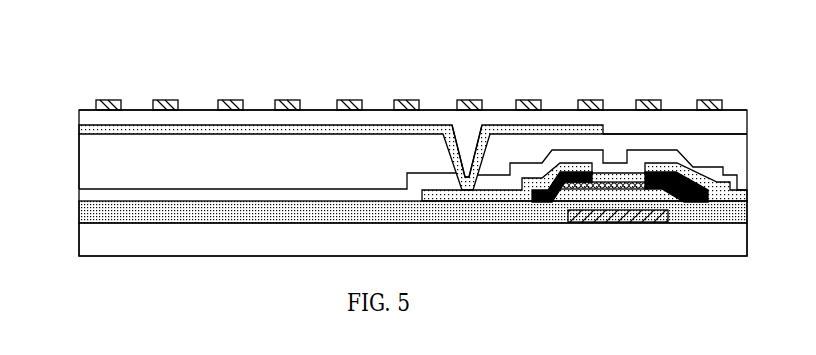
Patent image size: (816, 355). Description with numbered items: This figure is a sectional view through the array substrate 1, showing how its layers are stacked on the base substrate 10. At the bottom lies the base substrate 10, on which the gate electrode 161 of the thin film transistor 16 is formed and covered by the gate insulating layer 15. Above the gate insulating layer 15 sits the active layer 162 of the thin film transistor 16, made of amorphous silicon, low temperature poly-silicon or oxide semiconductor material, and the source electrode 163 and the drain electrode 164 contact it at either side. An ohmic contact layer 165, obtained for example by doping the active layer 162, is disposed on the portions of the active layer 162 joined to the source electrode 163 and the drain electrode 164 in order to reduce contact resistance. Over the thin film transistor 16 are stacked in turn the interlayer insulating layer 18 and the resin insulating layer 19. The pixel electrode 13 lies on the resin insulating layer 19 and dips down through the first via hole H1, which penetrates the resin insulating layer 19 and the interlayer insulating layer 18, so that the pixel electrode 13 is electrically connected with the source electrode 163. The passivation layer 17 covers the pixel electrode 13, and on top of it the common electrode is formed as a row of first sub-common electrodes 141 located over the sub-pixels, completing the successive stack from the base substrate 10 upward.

The array substrate 1 is at (25, 47).
The base substrate 10 is at (125, 238).
The pixel electrode 13 is at (384, 130).
The gate insulating layer 15 is at (237, 207).
The thin film transistor 16 is at (584, 111).
The gate electrode 161 is at (616, 216).
The active layer 162 is at (580, 186).
The source electrode 163 is at (501, 198).
The drain electrode 164 is at (676, 119).
The ohmic contact layer 165 is at (538, 186).
The passivation layer 17 is at (428, 117).
The interlayer insulating layer 18 is at (285, 195).
The resin insulating layer 19 is at (335, 165).
The first sub-common electrode 141 is at (97, 100).
The first via hole H1 is at (462, 150).